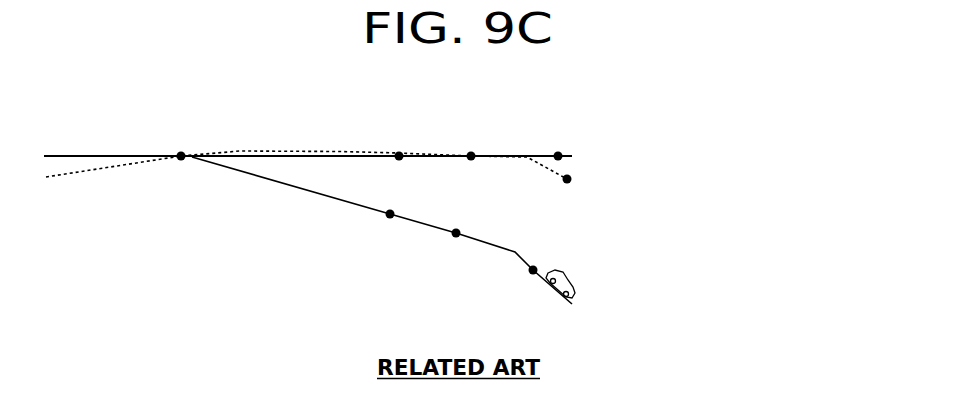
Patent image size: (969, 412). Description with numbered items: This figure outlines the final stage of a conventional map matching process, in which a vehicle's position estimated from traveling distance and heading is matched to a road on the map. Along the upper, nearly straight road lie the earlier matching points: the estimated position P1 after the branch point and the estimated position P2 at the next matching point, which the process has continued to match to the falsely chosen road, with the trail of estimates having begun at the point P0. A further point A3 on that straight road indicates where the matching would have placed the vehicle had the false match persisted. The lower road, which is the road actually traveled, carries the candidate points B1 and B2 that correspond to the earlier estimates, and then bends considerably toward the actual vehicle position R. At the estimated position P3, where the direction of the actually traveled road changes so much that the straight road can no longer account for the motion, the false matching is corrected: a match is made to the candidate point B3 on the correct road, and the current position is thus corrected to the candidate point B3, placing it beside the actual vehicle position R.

The position P0 (A0) of the vehicle P0 is at (182, 151).
The estimated position P1 is at (399, 151).
The estimated position P2 is at (471, 151).
The predicted position A3 is at (558, 151).
The estimated position P3 is at (563, 180).
The candidate point B1 is at (390, 219).
The position B2 of the other vehicle B2 is at (455, 238).
The candidate point B3 is at (533, 275).
The actual vehicle position R is at (566, 269).